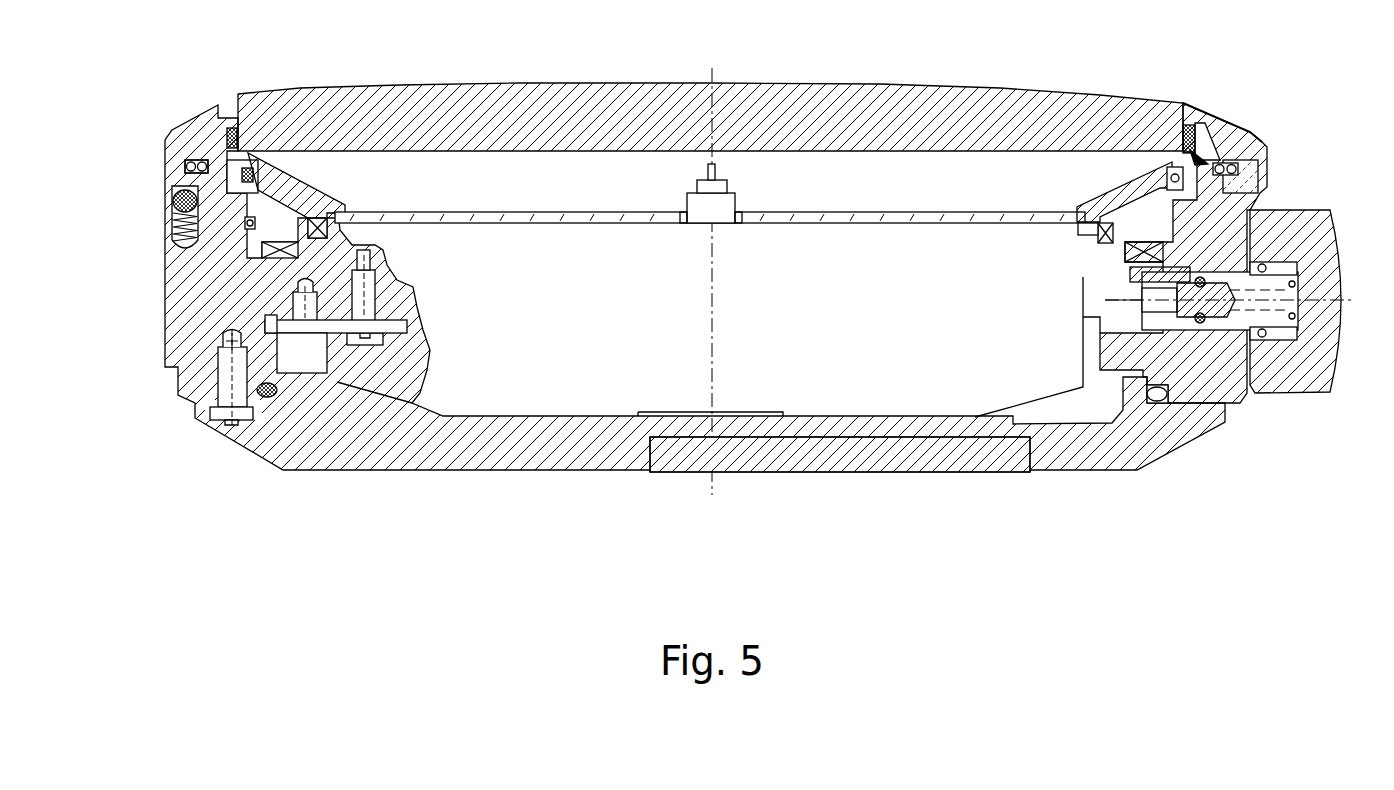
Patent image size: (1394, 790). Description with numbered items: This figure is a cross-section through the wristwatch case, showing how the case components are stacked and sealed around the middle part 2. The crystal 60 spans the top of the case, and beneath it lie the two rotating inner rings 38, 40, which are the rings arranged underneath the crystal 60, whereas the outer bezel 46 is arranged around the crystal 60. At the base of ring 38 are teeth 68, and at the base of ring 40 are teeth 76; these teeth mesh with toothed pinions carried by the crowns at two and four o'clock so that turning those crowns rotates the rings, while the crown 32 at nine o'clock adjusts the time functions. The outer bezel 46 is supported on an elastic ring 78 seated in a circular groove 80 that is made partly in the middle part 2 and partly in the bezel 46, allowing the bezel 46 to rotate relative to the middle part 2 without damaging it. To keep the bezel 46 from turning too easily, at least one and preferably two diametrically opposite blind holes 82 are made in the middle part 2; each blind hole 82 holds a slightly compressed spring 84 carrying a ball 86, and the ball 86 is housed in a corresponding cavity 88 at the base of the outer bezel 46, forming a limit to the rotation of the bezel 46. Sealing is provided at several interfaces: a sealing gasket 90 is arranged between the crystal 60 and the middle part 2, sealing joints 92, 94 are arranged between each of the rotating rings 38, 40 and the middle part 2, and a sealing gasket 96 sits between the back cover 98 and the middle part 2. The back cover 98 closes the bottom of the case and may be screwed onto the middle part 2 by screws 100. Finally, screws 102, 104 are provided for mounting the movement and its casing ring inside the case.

The middle part 2 is at (1250, 197).
The crown 32 is at (1320, 243).
The rotating ring 38 is at (1100, 197).
The rotating ring 40 is at (1123, 257).
The outer bezel 46 is at (1233, 123).
The crystal 60 is at (780, 96).
The teeth 68 is at (1078, 228).
The teeth 76 is at (1127, 277).
The elastic ring 78 is at (1258, 165).
The circular groove 80 is at (1192, 152).
The blind hole 82 is at (180, 237).
The spring 84 is at (178, 240).
The ball 86 is at (172, 200).
The cavity 88 is at (184, 195).
The sealing gasket 90 is at (1190, 123).
The sealing joint 92 is at (1172, 176).
The sealing joint 94 is at (1247, 227).
The sealing gasket 96 is at (1153, 403).
The back cover 98 is at (760, 470).
The screws 100 is at (230, 380).
The screws 102 is at (413, 288).
The screws 104 is at (290, 302).